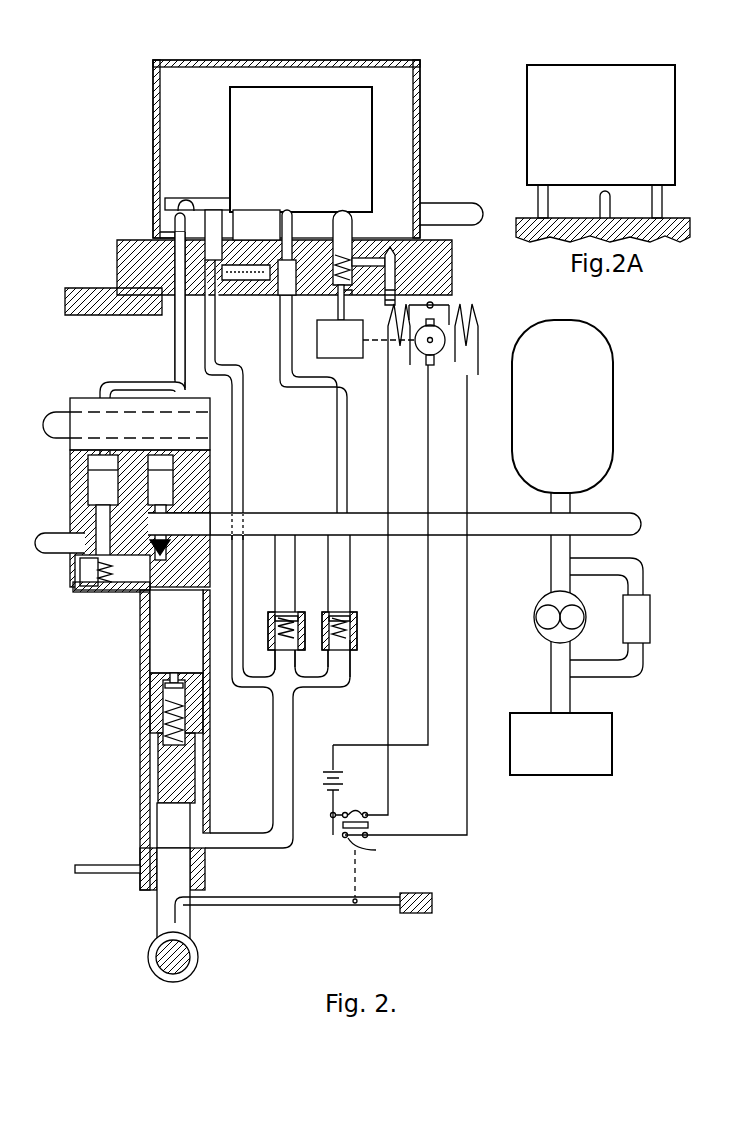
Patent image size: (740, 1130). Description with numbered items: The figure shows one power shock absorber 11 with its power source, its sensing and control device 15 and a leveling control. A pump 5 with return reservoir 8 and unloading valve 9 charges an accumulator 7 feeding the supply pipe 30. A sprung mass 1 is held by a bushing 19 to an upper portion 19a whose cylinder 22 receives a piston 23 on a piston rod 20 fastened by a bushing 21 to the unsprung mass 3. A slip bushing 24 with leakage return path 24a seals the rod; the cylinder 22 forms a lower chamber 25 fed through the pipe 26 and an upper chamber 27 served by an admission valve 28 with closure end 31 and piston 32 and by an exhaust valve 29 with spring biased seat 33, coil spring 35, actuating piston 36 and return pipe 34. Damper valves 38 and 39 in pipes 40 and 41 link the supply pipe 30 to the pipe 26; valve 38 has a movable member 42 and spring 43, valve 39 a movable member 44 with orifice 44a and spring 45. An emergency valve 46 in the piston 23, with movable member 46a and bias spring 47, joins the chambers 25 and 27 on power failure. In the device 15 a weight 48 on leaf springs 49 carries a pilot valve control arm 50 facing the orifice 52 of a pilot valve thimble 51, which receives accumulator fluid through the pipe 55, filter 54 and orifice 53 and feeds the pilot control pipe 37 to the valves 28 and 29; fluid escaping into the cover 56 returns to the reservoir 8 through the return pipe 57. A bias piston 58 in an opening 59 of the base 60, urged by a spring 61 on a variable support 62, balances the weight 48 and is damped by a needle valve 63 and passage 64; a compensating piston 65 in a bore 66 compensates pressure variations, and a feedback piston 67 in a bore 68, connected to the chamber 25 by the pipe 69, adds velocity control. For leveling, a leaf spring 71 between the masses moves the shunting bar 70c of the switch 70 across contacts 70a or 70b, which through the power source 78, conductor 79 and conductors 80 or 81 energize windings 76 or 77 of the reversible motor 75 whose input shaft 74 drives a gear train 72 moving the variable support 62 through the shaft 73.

In FIG. 2, the sprung mass 1 is at (65, 302).
In FIG. 2, the unsprung mass 3 is at (158, 965).
In FIG. 2, the pump 5 is at (545, 632).
In FIG. 2, the accumulator 7 is at (613, 392).
In FIG. 2, the return reservoir 8 is at (590, 720).
In FIG. 2, the unloading valve 9 is at (650, 620).
In FIG. 2, the power shock absorber 11 is at (62, 723).
In FIG. 2, the sensing and control device 15 is at (420, 70).
In FIG. 2, the bushing 19 is at (70, 400).
In FIG. 2, the upper portion 19a is at (73, 586).
In FIG. 2, the piston rod 20 is at (157, 914).
In FIG. 2, the bushing 21 is at (150, 950).
In FIG. 2, the cylinder 22 is at (140, 640).
In FIG. 2, the piston 23 is at (158, 673).
In FIG. 2, the fluid sealing slip bushing 24 is at (150, 845).
In FIG. 2, the leakage return path 24a is at (140, 882).
In FIG. 2, the chamber 25 is at (150, 820).
In FIG. 2, the feeder pipe 26 is at (246, 833).
In FIG. 2, the second chamber 27 is at (150, 606).
In FIG. 2, the pressure fluid admission valve 28 is at (160, 462).
In FIG. 2, the exhaust valve 29 is at (110, 462).
In FIG. 2, the supply pipe 30 is at (508, 513).
In FIG. 2, the valve closure end 31 is at (162, 556).
In FIG. 2, the piston 32 is at (154, 496).
In FIG. 2, the valve seat 33 is at (80, 568).
In FIG. 2, the fluid return pipe 34 is at (46, 533).
In FIG. 2, the coil bias spring 35 is at (112, 574).
In FIG. 2, the actuating piston 36 is at (94, 496).
In FIG. 2, the pilot valve control pipe 37 is at (164, 380).
In FIG. 2, the damper valve 38 is at (292, 612).
In FIG. 2, the damper valve 39 is at (357, 636).
In FIG. 2, the fluid pipe 40 is at (295, 568).
In FIG. 2, the fluid pipe 41 is at (350, 568).
In FIG. 2, the movable member 42 is at (275, 660).
In FIG. 2, the spring 43 is at (275, 618).
In FIG. 2, the movable member 44 is at (328, 660).
In FIG. 2, the orifice 44a is at (340, 616).
In FIG. 2, the spring 45 is at (350, 658).
In FIG. 2, the emergency flow valve 46 is at (175, 676).
In FIG. 2, the movable member 46a is at (165, 690).
In FIG. 2, the bias spring 47 is at (165, 718).
In FIG. 2A, the weight 48 is at (527, 120).
In FIG. 2, the weight 48 is at (372, 124).
In FIG. 2A, the leaf springs 49 is at (538, 204).
In FIG. 2, the leaf springs 49 is at (240, 226).
In FIG. 2, the pilot valve control arm 50 is at (186, 200).
In FIG. 2, the pilot valve thimble 51 is at (160, 228).
In FIG. 2, the orifice 52 is at (175, 222).
In FIG. 2, the orifice 53 is at (185, 296).
In FIG. 2, the filter 54 is at (216, 300).
In FIG. 2, the pressure pipe 55 is at (337, 403).
In FIG. 2, the cover 56 is at (248, 60).
In FIG. 2, the return pipe 57 is at (456, 203).
In FIG. 2A, the piston 58 is at (600, 204).
In FIG. 2, the piston 58 is at (352, 228).
In FIG. 2, the opening 59 is at (352, 295).
In FIG. 2, the base 60 is at (462, 285).
In FIG. 2, the bias spring 61 is at (333, 264).
In FIG. 2, the variable support 62 is at (338, 300).
In FIG. 2, the needle valve 63 is at (395, 263).
In FIG. 2, the passage 64 is at (368, 257).
In FIG. 2, the pressure compensating piston 65 is at (292, 228).
In FIG. 2, the bore 66 is at (280, 300).
In FIG. 2, the feedback piston 67 is at (208, 200).
In FIG. 2, the bore 68 is at (240, 282).
In FIG. 2, the fluid control pipe 69 is at (228, 390).
In FIG. 2, the leveling control switch 70 is at (336, 855).
In FIG. 2, the pair of contacts 70a is at (350, 805).
In FIG. 2, the pair of contacts 70b is at (376, 850).
In FIG. 2, the shunting bar 70c is at (368, 825).
In FIG. 2, the resilient leaf spring 71 is at (296, 897).
In FIG. 2, the gear train 72 is at (326, 358).
In FIG. 2, the vertically moving shaft 73 is at (350, 324).
In FIG. 2, the input shaft 74 is at (386, 340).
In FIG. 2, the reversible motor 75 is at (433, 366).
In FIG. 2, the winding 76 is at (416, 366).
In FIG. 2, the winding 77 is at (470, 336).
In FIG. 2, the source of power 78 is at (324, 772).
In FIG. 2, the conductor 79 is at (428, 668).
In FIG. 2, the conductor 80 is at (388, 697).
In FIG. 2, the conductor 81 is at (467, 700).